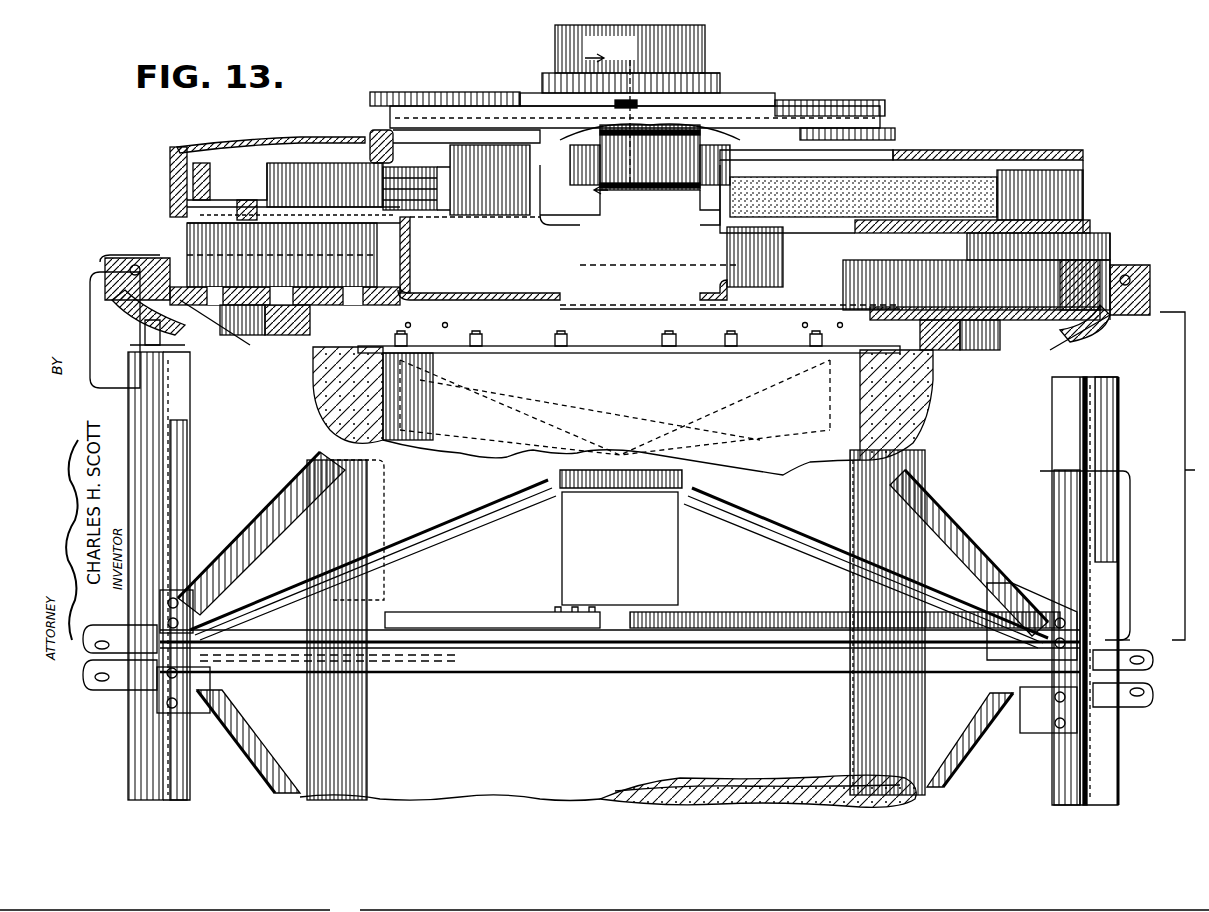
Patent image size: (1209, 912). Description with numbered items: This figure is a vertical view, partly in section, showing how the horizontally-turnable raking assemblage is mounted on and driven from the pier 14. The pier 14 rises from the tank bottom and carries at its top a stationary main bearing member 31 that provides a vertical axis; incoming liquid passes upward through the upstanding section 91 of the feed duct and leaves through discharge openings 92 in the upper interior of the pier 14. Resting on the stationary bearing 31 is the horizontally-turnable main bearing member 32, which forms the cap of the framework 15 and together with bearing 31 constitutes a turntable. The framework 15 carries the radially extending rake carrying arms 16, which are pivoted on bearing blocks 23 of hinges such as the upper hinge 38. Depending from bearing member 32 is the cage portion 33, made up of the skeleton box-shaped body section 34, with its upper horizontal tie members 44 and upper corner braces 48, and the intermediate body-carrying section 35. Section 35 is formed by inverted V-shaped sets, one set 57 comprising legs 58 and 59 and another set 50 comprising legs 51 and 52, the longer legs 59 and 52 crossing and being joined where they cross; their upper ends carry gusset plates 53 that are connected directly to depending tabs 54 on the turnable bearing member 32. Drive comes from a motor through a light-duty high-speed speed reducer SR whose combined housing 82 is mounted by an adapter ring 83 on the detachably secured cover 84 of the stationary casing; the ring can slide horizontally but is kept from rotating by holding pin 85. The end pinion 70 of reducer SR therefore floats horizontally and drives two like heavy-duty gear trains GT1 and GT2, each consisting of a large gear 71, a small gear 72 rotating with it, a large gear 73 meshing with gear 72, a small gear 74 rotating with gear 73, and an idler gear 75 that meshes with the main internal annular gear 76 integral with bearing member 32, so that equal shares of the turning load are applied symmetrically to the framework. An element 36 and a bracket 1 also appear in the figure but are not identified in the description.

The speed reducing and power transmission mechanism SR is at (647, 65).
The rake carrying arms 16 is at (596, 124).
The holding pin 85 is at (622, 100).
The cover portion 84 is at (538, 110).
The combined housing 82 is at (712, 76).
The adapter ring 83 is at (765, 95).
The speed reducing and power transmission mechanism GT1 is at (287, 180).
The speed reducing and power transmission mechanism GT2 is at (985, 182).
The small gear 74 is at (800, 270).
The large gear 73 is at (740, 236).
The small gear 72 is at (722, 216).
The small pinion 70 is at (622, 185).
The large gear 71 is at (720, 165).
The horizontally-turnable main bearing member 32 is at (1150, 300).
The seal ring 36 is at (1115, 320).
The framework 15 is at (90, 333).
The depending tabs 54 is at (145, 330).
The gusset plates 53 is at (150, 348).
The stationary main bearing member 31 is at (1085, 325).
The main internal annular gear 76 is at (990, 350).
The idler gear 75 is at (940, 350).
The leg member 52 is at (708, 420).
The leg member 59 is at (548, 420).
The set of inverted V-shaped members 50 is at (795, 412).
The set of inverted V-shaped members 57 is at (445, 405).
The skeleton box-shaped body section 34 is at (1052, 795).
The intermediate body-carrying section 35 is at (1071, 550).
The machine assembly 1 is at (1184, 476).
The depending cage portion 33 is at (1146, 641).
The leg member 58 is at (305, 487).
The leg member 51 is at (932, 508).
The discharge openings 92 is at (619, 559).
The upper horizontally extending tie members 44 is at (540, 665).
The upper horizontally extending corner braces 48 is at (718, 624).
The bearing blocks 23 is at (1153, 675).
The upper hinge 38 is at (1148, 720).
The pier 14 is at (463, 761).
The upstanding section 91 is at (750, 785).